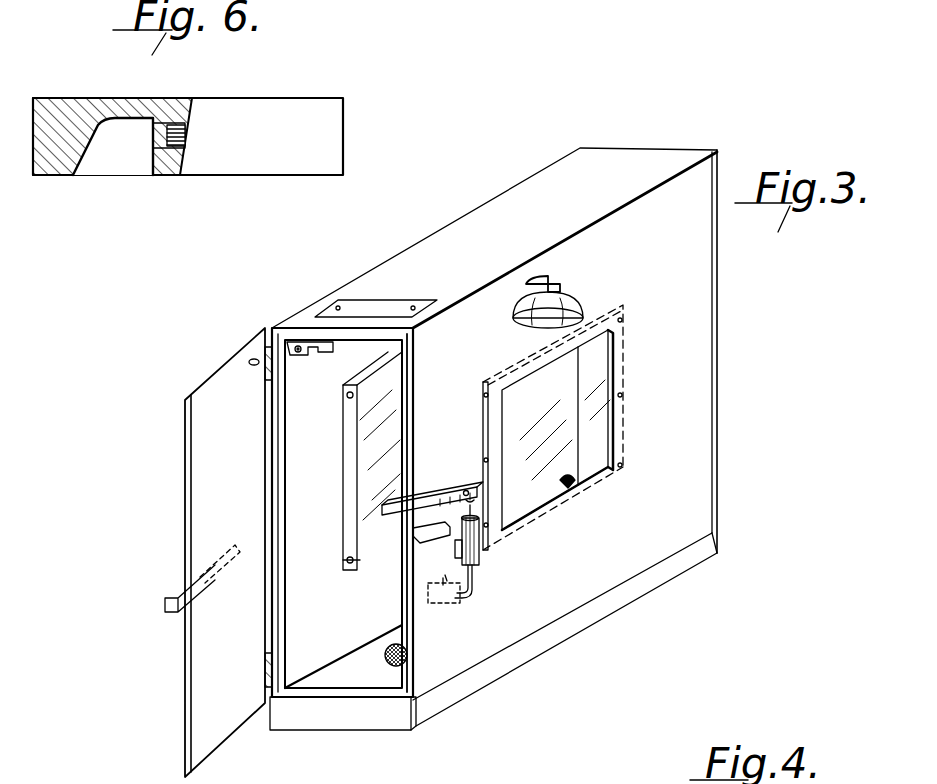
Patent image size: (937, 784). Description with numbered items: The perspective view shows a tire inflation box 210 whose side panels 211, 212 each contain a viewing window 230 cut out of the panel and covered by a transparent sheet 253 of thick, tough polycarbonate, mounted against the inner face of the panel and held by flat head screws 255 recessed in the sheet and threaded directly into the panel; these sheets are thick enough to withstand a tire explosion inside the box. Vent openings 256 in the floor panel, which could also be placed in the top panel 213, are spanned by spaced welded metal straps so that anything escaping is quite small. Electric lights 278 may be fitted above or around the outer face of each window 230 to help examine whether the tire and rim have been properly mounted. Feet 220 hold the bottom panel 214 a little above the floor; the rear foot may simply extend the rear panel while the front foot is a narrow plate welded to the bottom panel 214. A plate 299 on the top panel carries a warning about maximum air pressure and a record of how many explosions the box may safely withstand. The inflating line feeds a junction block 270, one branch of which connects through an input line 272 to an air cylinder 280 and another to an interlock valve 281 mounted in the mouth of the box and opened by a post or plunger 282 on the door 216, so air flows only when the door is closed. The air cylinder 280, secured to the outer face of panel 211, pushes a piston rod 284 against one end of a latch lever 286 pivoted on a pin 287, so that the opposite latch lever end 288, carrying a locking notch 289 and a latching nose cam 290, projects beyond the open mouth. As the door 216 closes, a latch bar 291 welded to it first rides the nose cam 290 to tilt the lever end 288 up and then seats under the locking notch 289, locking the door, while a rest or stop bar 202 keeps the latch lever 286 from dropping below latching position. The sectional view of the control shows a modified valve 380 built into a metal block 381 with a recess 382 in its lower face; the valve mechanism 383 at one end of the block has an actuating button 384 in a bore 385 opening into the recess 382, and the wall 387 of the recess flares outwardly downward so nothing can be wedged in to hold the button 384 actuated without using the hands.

In FIG. 6, the valve 380 is at (312, 90).
In FIG. 6, the metal block 381 is at (45, 108).
In FIG. 6, the recess 382 is at (148, 160).
In FIG. 6, the valve mechanism 383 is at (302, 133).
In FIG. 6, the actuating button 384 is at (173, 122).
In FIG. 6, the bore 385 is at (160, 135).
In FIG. 6, the wall of recess 387 is at (88, 158).
In FIG. 3, the box 210 is at (318, 294).
In FIG. 3, the side panel 211 is at (598, 580).
In FIG. 3, the side panel 212 is at (290, 660).
In FIG. 3, the top panel 213 is at (448, 250).
In FIG. 3, the bottom panel 214 is at (385, 685).
In FIG. 3, the door 216 is at (225, 665).
In FIG. 3, the feet 220 is at (416, 712).
In FIG. 3, the viewing window 230 is at (560, 498).
In FIG. 3, the transparent sheet 253 is at (365, 395).
In FIG. 3, the flat head screws 255 is at (345, 565).
In FIG. 3, the vent openings 256 is at (390, 668).
In FIG. 3, the junction block 270 is at (455, 610).
In FIG. 3, the input line 272 is at (474, 590).
In FIG. 3, the electric lights 278 is at (575, 300).
In FIG. 3, the air cylinder 280 is at (480, 565).
In FIG. 3, the interlock valve 281 is at (305, 340).
In FIG. 3, the post or plunger 282 is at (252, 358).
In FIG. 3, the piston rod 284 is at (540, 480).
In FIG. 3, the latch lever 286 is at (452, 478).
In FIG. 3, the pin 287 is at (455, 488).
In FIG. 3, the latch lever end 288 is at (390, 508).
In FIG. 3, the locking notch 289 is at (430, 540).
In FIG. 3, the latching nose cam 290 is at (380, 525).
In FIG. 3, the latch bar 291 is at (170, 595).
In FIG. 3, the plate 299 is at (362, 305).
In FIG. 3, the rest or stop bar 202 is at (435, 545).